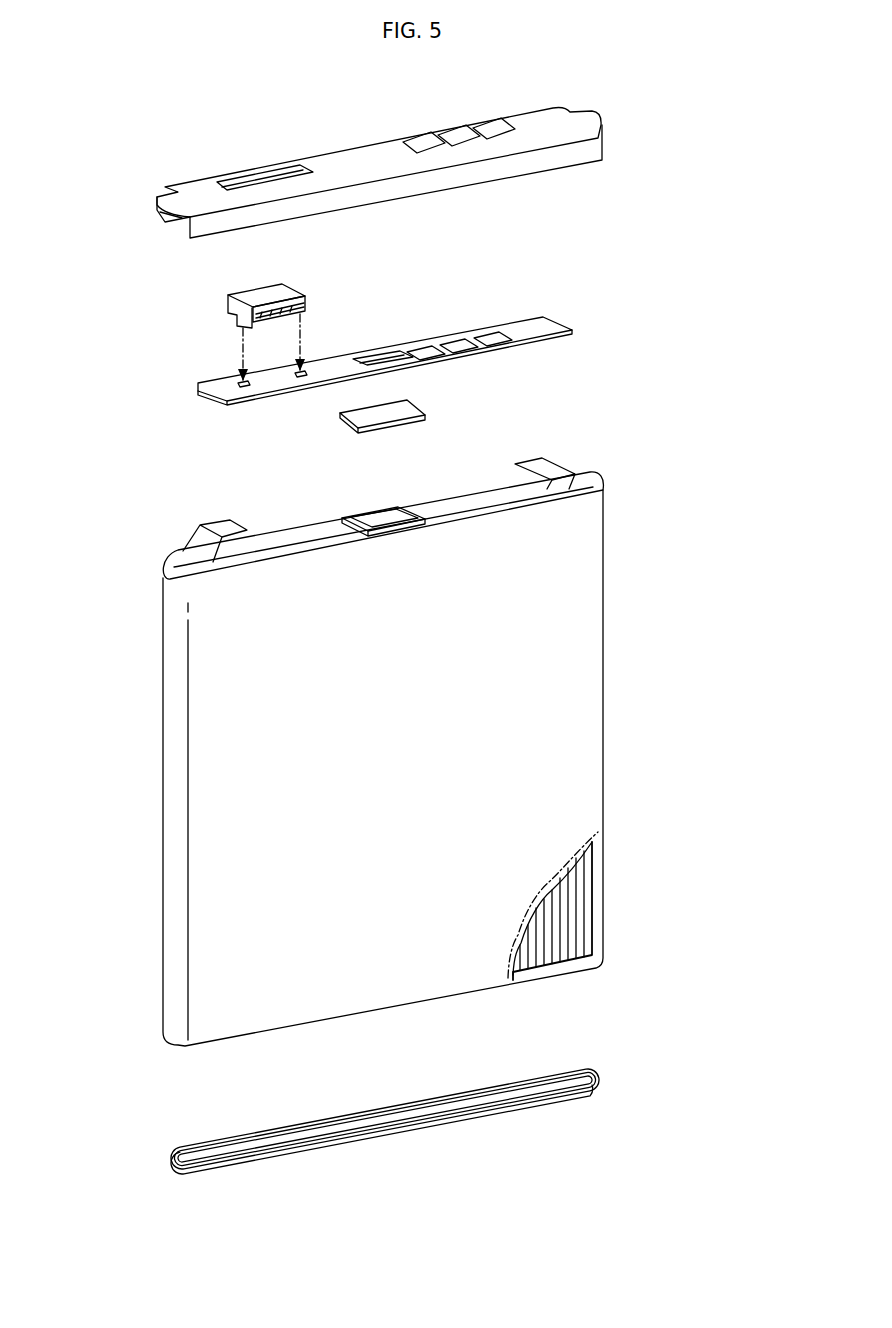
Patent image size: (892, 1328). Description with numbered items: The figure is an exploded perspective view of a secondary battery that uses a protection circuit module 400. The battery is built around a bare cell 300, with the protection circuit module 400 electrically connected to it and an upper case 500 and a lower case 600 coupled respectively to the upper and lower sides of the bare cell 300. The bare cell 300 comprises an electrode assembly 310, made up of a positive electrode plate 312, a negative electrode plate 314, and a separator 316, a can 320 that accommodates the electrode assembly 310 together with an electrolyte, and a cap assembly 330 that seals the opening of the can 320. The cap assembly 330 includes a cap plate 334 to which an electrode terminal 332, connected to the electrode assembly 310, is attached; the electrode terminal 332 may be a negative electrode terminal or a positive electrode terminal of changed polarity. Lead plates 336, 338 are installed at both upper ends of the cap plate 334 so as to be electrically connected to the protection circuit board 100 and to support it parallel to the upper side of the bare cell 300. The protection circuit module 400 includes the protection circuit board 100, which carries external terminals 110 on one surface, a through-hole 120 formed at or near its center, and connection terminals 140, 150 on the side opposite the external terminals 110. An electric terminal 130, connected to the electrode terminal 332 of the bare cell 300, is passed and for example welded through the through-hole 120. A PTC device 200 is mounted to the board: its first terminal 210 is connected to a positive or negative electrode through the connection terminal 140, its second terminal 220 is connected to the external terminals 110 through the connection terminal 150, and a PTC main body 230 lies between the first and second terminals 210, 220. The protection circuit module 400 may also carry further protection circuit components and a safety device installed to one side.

The protection circuit board 100 is at (352, 360).
The external terminals 110 is at (483, 337).
The through-hole 120 is at (377, 357).
The electric terminal 130 is at (423, 403).
The connection terminal 140 is at (252, 387).
The connection terminal 150 is at (310, 373).
The PTC device 200 is at (242, 306).
The first terminal 210 is at (228, 308).
The second terminal 220 is at (307, 310).
The PTC main body 230 is at (298, 302).
The bare cell 300 is at (407, 724).
The electrode assembly 310 is at (633, 906).
The positive electrode plate 312 is at (588, 897).
The negative electrode plate 314 is at (568, 933).
The separator 316 is at (577, 913).
The can 320 is at (178, 700).
The cap assembly 330 is at (338, 491).
The electrode terminal 332 is at (380, 515).
The cap plate 334 is at (297, 538).
The lead plate 336 is at (220, 527).
The lead plate 338 is at (588, 473).
The protection circuit module 400 is at (587, 295).
The upper case 500 is at (357, 155).
The lower case 600 is at (163, 1163).